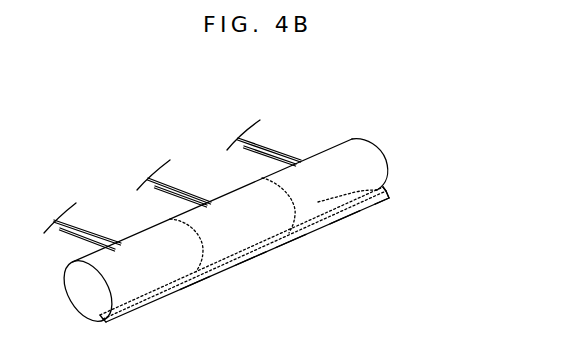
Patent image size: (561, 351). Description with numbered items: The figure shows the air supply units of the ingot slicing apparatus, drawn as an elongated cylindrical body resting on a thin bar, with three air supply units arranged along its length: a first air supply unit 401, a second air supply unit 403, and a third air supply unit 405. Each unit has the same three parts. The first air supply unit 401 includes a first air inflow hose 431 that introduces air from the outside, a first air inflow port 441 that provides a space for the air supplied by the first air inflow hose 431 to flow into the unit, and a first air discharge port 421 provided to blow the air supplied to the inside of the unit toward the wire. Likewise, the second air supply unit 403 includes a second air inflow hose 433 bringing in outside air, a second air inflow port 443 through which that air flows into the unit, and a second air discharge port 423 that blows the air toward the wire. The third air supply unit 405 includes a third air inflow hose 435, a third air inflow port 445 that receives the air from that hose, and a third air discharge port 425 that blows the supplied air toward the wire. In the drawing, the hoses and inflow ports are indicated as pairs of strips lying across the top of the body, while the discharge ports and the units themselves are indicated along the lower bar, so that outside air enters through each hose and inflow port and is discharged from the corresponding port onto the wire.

The first air supply unit 401 is at (165, 303).
The first air discharge port 421 is at (200, 287).
The second air supply unit 403 is at (250, 257).
The second air discharge port 423 is at (290, 239).
The third air supply unit 405 is at (345, 218).
The third air discharge port 425 is at (391, 201).
The first air inflow hose 431 is at (92, 232).
The first air inflow port 441 is at (130, 247).
The second air inflow hose 433 is at (187, 182).
The second air inflow port 443 is at (222, 206).
The third air inflow hose 435 is at (277, 144).
The third air inflow port 445 is at (314, 166).